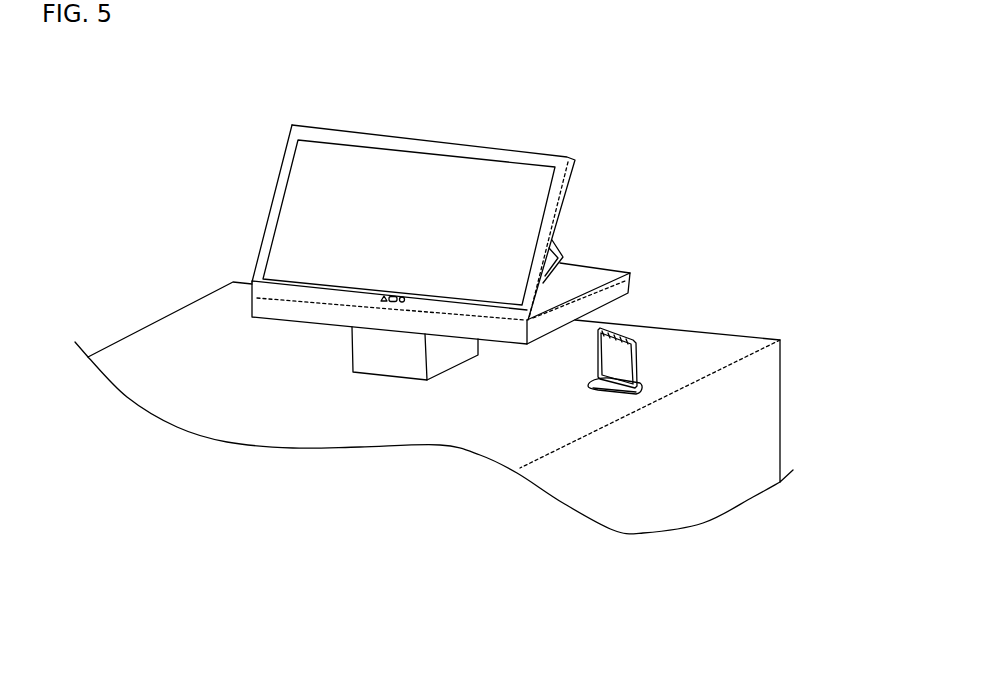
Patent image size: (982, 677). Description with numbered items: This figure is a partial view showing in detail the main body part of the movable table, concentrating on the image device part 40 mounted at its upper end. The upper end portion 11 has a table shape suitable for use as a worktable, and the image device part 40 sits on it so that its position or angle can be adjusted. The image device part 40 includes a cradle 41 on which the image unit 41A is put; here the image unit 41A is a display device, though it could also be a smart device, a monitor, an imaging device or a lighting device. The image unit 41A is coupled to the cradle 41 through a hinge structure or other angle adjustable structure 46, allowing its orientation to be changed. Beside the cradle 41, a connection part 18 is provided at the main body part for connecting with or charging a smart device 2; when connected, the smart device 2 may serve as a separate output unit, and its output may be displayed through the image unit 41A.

The upper end portion 11 is at (165, 350).
The image device part 40 is at (478, 235).
The cradle 41 is at (620, 285).
The image unit 41A is at (435, 178).
The angle adjustable structure 46 is at (563, 246).
The smart device 2 is at (623, 362).
The connection part 18 is at (617, 393).